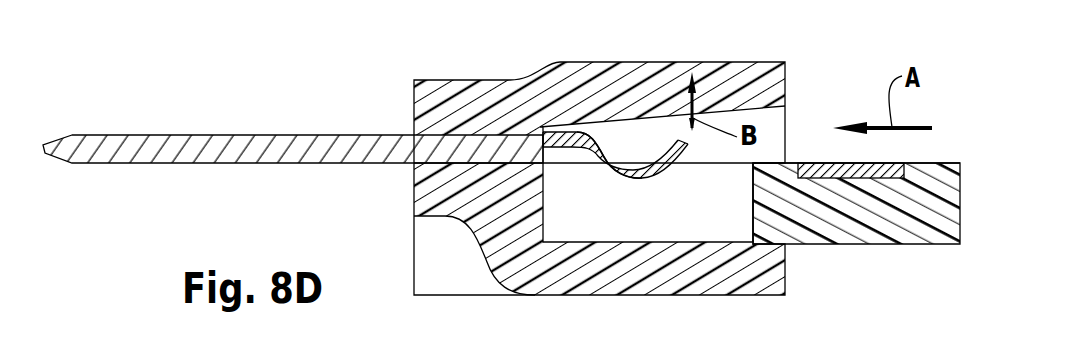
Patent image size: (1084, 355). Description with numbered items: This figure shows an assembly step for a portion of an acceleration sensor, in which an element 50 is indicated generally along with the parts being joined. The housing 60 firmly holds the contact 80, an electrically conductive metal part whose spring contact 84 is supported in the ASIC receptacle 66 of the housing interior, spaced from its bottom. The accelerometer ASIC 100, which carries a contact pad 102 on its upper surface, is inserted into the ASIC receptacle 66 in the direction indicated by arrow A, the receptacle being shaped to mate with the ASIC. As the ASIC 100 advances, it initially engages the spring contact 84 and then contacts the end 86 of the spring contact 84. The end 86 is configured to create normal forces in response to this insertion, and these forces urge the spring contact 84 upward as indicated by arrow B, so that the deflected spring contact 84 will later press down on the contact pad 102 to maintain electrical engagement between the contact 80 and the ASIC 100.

The needle assembly 50 is at (266, 80).
The contact 80 is at (347, 147).
The housing 60 is at (497, 212).
The ASIC receptacle 66 is at (578, 108).
The spring contact 84 is at (637, 157).
The end of the spring contact 86 is at (681, 140).
The accelerometer ASIC 100 is at (886, 213).
The contact pad 102 is at (837, 172).